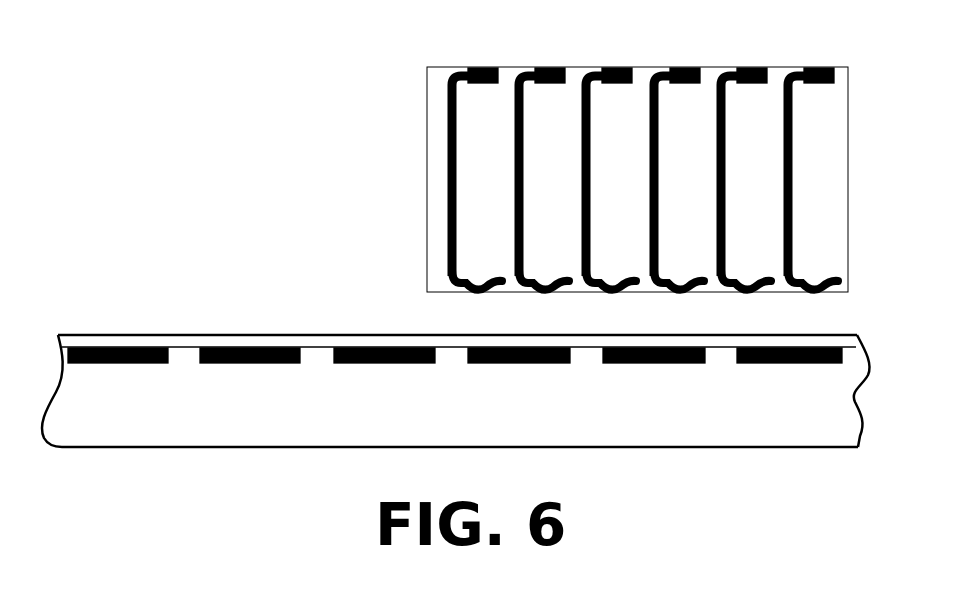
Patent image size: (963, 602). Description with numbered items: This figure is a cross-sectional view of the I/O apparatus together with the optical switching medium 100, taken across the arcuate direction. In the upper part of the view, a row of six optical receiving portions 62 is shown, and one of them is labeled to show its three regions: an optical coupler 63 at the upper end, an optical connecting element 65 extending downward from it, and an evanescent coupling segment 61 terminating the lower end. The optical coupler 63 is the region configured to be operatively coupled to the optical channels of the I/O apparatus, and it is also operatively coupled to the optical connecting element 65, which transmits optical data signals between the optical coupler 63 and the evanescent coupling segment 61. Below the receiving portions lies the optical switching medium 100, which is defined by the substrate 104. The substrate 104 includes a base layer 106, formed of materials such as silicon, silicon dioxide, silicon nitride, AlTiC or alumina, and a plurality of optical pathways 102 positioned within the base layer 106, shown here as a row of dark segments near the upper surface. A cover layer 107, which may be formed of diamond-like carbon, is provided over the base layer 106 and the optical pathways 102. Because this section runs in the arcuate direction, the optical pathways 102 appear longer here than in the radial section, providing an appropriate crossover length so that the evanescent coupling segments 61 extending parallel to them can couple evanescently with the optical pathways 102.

The optical switching medium 100 is at (76, 470).
The optical pathways 102 is at (530, 363).
The substrate 104 is at (163, 447).
The base layer 106 is at (313, 418).
The cover layer 107 is at (185, 348).
The evanescent coupling segment 61 is at (488, 288).
The optical receiving portions 62 is at (457, 108).
The optical coupler 63 is at (482, 68).
The optical connecting element 65 is at (448, 157).